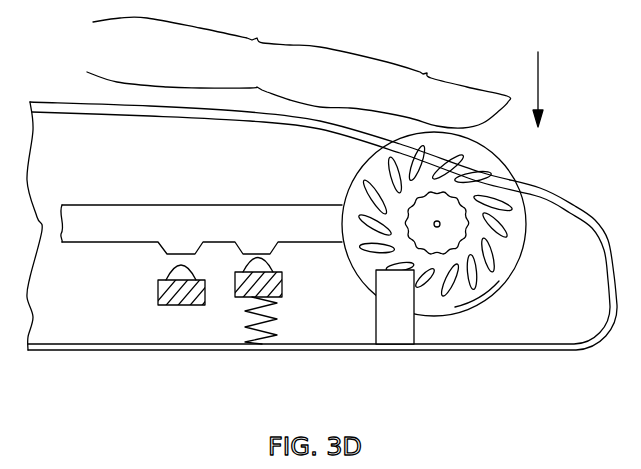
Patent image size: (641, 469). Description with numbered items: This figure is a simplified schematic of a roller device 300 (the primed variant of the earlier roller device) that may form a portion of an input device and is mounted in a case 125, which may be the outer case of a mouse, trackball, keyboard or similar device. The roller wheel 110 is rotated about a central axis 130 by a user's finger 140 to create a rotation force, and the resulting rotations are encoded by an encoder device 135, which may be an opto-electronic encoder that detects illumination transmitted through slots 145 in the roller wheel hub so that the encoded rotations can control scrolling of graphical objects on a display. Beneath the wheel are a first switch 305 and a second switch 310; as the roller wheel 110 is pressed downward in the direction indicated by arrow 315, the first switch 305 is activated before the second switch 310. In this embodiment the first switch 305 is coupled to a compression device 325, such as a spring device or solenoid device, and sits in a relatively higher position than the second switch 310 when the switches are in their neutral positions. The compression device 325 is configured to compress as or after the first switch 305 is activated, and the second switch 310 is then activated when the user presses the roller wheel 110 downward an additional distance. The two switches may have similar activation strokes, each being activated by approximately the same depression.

The roller device 300 is at (130, 163).
The finger 140 is at (388, 52).
The arrow 315 is at (555, 84).
The roller wheel 110 is at (513, 271).
The central axis 130 is at (431, 230).
The slots 145 is at (500, 207).
The case 125 is at (446, 352).
The encoder device 135 is at (376, 333).
The first switch 305 is at (283, 284).
The second switch 310 is at (157, 290).
The compression device 325 is at (243, 323).